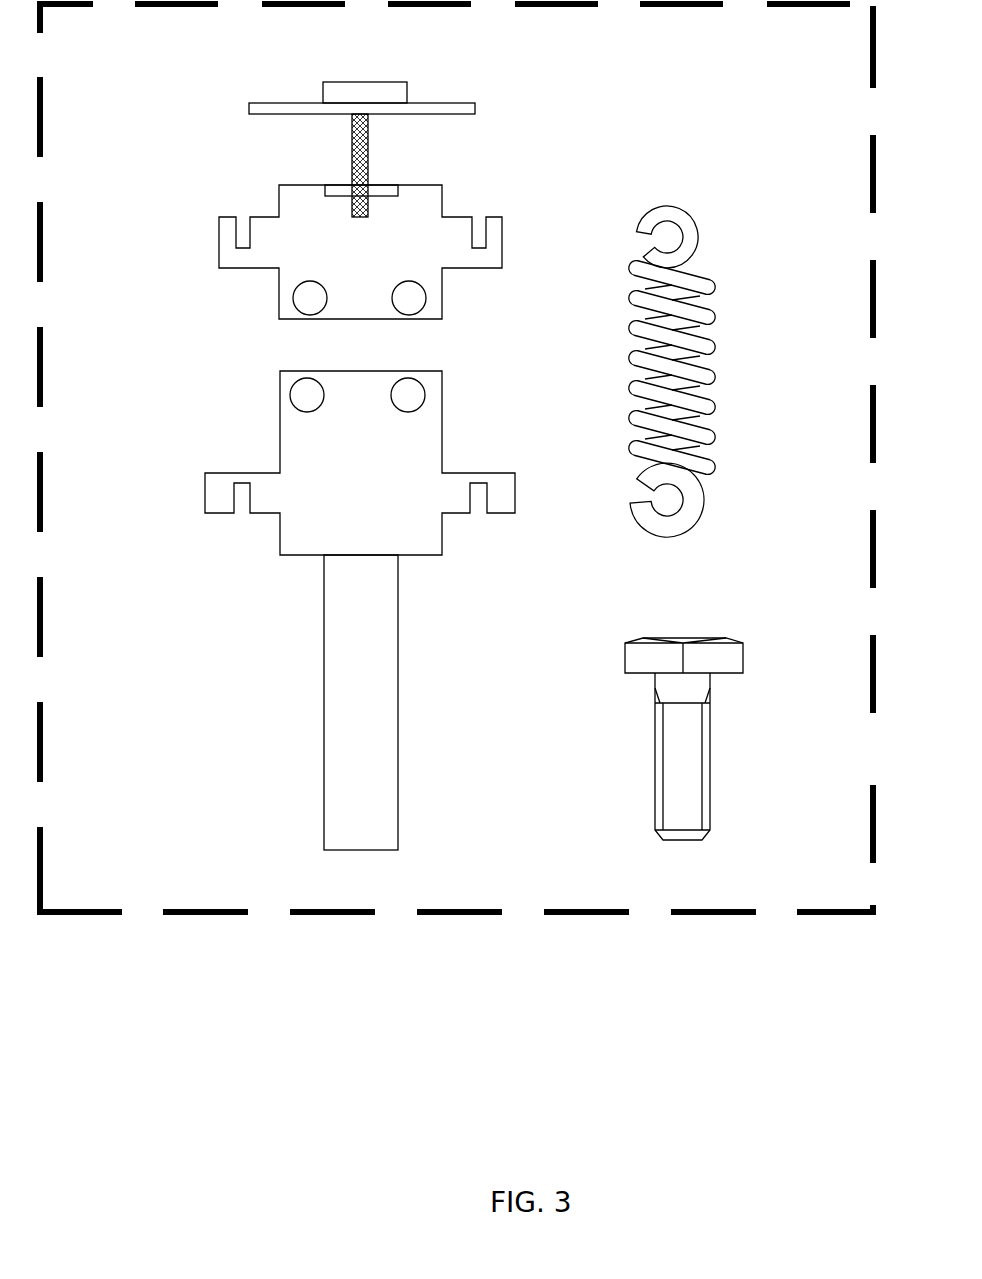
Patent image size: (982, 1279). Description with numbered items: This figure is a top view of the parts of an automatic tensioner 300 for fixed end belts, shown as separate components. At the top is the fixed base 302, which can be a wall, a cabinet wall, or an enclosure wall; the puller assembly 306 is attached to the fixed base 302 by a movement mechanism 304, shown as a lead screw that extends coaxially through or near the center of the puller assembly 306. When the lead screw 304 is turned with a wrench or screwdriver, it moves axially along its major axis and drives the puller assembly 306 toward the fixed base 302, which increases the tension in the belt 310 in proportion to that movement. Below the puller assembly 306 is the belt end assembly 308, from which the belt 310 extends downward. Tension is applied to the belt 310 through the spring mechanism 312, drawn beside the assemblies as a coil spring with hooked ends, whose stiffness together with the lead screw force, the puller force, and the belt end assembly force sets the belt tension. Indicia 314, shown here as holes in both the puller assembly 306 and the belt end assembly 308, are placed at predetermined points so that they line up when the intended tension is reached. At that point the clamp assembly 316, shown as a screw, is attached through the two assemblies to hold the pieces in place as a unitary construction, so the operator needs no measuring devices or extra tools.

The automatic tensioner 300 is at (542, 1022).
The fixed base 302 is at (448, 103).
The movement mechanism 304 is at (380, 160).
The puller assembly 306 is at (456, 292).
The belt end assembly 308 is at (456, 433).
The belt 310 is at (418, 716).
The spring mechanism 312 is at (735, 328).
The indicia 314 is at (298, 388).
The clamp assembly 316 is at (747, 667).